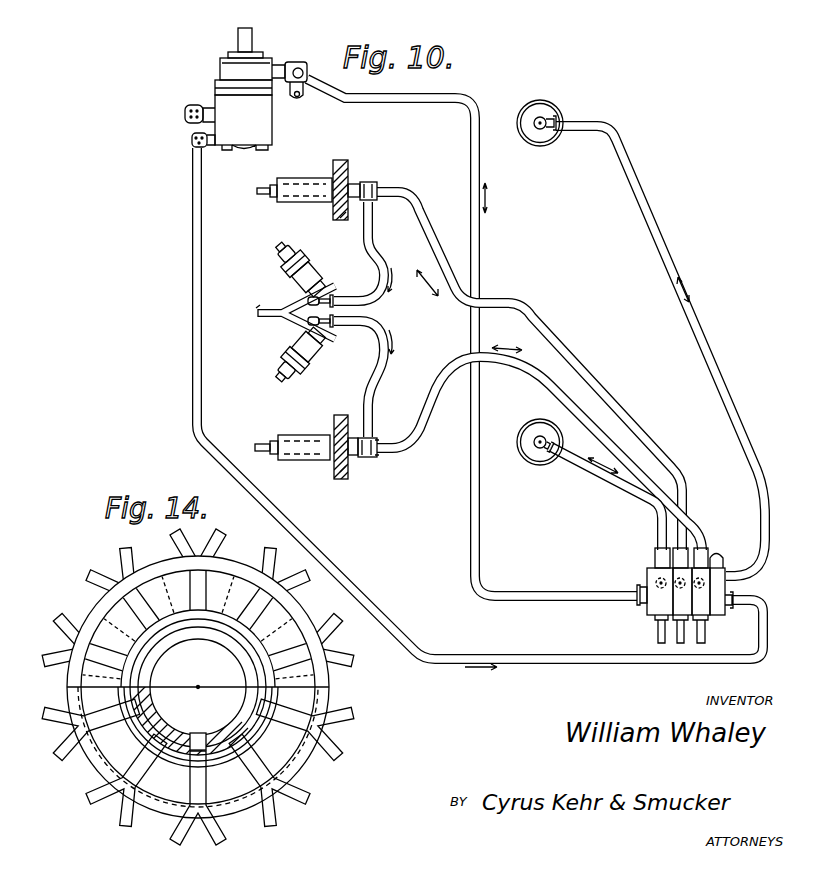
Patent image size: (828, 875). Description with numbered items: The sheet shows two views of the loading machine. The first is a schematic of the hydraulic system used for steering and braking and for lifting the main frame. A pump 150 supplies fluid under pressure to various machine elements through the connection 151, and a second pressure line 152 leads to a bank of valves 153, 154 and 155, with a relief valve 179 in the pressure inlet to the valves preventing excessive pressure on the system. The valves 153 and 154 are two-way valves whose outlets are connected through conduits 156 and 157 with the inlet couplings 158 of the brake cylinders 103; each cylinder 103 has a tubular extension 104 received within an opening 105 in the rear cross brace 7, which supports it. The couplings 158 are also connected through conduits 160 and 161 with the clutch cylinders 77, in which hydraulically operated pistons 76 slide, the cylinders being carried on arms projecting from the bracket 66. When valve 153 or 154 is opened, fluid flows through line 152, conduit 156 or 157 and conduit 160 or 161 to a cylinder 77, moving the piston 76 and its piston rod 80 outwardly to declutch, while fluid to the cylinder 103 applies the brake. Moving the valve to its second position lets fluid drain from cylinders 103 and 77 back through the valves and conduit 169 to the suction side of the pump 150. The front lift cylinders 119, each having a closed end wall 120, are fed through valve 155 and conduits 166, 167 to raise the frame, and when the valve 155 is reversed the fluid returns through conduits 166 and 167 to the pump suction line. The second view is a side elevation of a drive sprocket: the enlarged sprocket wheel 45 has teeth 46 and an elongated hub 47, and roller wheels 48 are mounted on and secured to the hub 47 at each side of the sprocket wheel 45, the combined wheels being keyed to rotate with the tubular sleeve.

In FIG. 10, the rear cross brace 7 is at (340, 160).
In FIG. 14, the sprocket wheel 45 is at (206, 687).
In FIG. 14, the teeth 46 is at (220, 545).
In FIG. 14, the hub 47 is at (240, 710).
In FIG. 14, the roller wheels 48 is at (106, 612).
In FIG. 10, the bracket 66 is at (258, 313).
In FIG. 10, the piston 76 is at (280, 265).
In FIG. 10, the cylinder 77 is at (313, 269).
In FIG. 10, the piston rod 80 is at (287, 246).
In FIG. 10, the cylinder 103 is at (300, 178).
In FIG. 10, the tubular extension 104 is at (353, 183).
In FIG. 10, the opening 105 is at (343, 222).
In FIG. 10, the cylinder 119 is at (556, 112).
In FIG. 10, the closed end wall 120 is at (546, 141).
In FIG. 10, the pump 150 is at (256, 72).
In FIG. 10, the connection 151 is at (184, 113).
In FIG. 10, the second pressure line 152 is at (416, 655).
In FIG. 10, the valve 153 is at (652, 614).
In FIG. 10, the valve 154 is at (680, 614).
In FIG. 10, the valve 155 is at (706, 614).
In FIG. 10, the conduit 156 is at (412, 434).
In FIG. 10, the conduit 157 is at (488, 298).
In FIG. 10, the inlet coupling 158 is at (370, 182).
In FIG. 10, the conduit 160 is at (375, 372).
In FIG. 10, the conduit 161 is at (370, 258).
In FIG. 10, the conduit 166 is at (615, 490).
In FIG. 10, the conduit 167 is at (765, 503).
In FIG. 10, the conduit 169 is at (480, 520).
In FIG. 10, the relief valve 179 is at (718, 554).